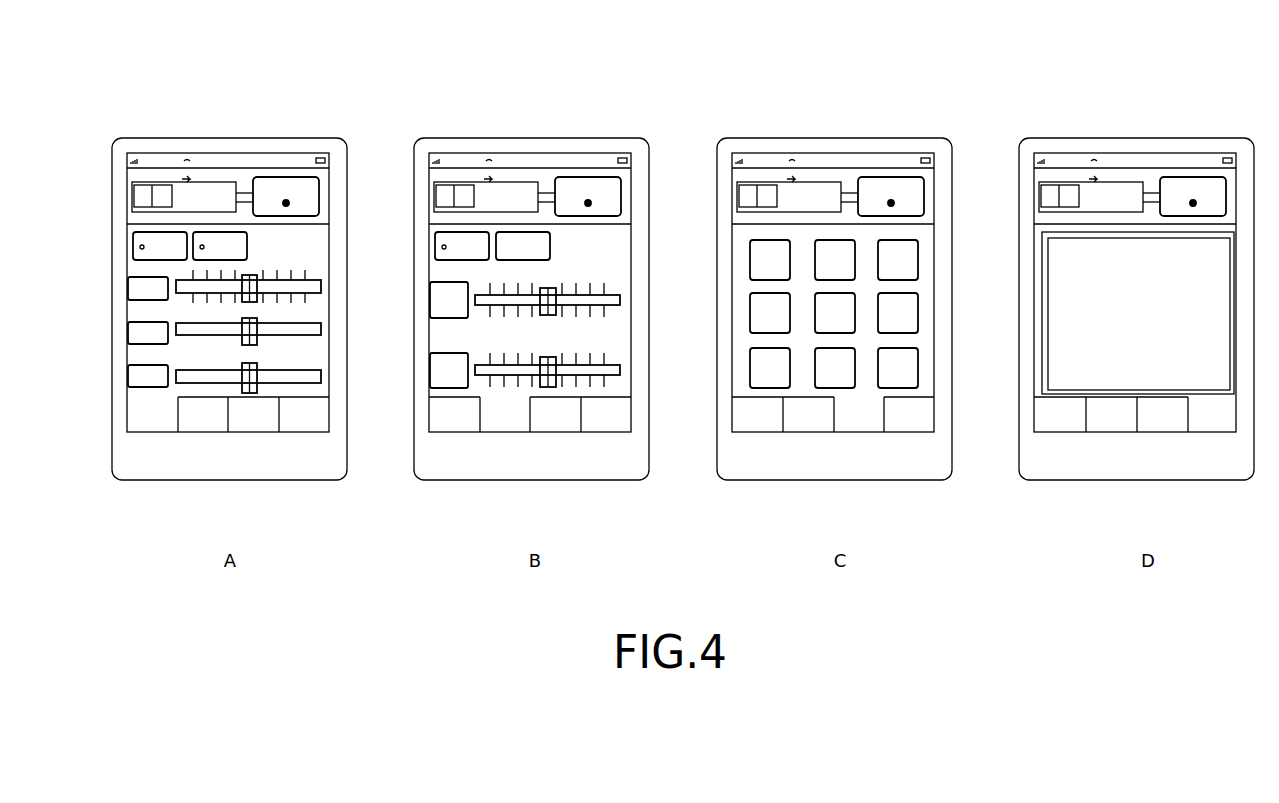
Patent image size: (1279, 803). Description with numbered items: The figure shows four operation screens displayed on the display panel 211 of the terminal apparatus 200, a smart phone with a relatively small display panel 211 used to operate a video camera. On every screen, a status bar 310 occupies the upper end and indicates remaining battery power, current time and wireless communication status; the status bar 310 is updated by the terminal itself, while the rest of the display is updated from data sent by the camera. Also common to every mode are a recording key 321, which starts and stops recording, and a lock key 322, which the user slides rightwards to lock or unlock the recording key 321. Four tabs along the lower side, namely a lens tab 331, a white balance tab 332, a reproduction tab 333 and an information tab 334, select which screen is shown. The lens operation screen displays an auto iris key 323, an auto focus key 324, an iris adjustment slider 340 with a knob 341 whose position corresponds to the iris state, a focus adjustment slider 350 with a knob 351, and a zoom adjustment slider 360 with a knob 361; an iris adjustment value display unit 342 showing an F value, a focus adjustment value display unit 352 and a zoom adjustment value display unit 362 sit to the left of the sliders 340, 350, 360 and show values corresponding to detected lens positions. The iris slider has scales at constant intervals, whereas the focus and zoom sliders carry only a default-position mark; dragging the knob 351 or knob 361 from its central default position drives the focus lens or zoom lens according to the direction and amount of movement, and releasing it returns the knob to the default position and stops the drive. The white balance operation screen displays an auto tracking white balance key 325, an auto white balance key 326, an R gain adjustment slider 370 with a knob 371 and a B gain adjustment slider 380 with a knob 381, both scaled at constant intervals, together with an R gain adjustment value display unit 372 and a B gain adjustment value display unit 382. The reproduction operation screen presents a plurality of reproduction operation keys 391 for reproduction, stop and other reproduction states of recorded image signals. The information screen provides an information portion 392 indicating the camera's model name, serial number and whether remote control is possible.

The terminal apparatus 200 is at (287, 138).
The display panel 211 is at (167, 153).
The status bar 310 is at (325, 155).
The recording key 321 is at (312, 200).
The lock key 322 is at (132, 193).
The auto iris key 323 is at (133, 247).
The auto focus key 324 is at (249, 245).
The auto tracking white balance (ATW) key 325 is at (437, 247).
The auto white balance (AWB) key 326 is at (552, 247).
The lens tab 331 is at (155, 425).
The white balance tab 332 is at (505, 425).
The reproduction tab 333 is at (860, 425).
The information tab 334 is at (1210, 425).
The iris adjustment slider 340 is at (318, 284).
The knob 341 is at (262, 298).
The iris adjustment value display unit 342 is at (128, 290).
The focus adjustment slider 350 is at (318, 330).
The knob 351 is at (262, 340).
The focus adjustment value display unit 352 is at (128, 333).
The zoom adjustment slider 360 is at (318, 382).
The knob 361 is at (262, 387).
The zoom adjustment value display unit 362 is at (128, 378).
The R gain adjustment slider 370 is at (590, 293).
The knob 371 is at (556, 310).
The R gain adjustment value display unit 372 is at (430, 295).
The B gain adjustment slider 380 is at (590, 363).
The knob 381 is at (556, 385).
The B gain adjustment value display unit 382 is at (430, 365).
The reproduction operation keys 391 is at (855, 238).
The information portion 392 is at (1048, 303).